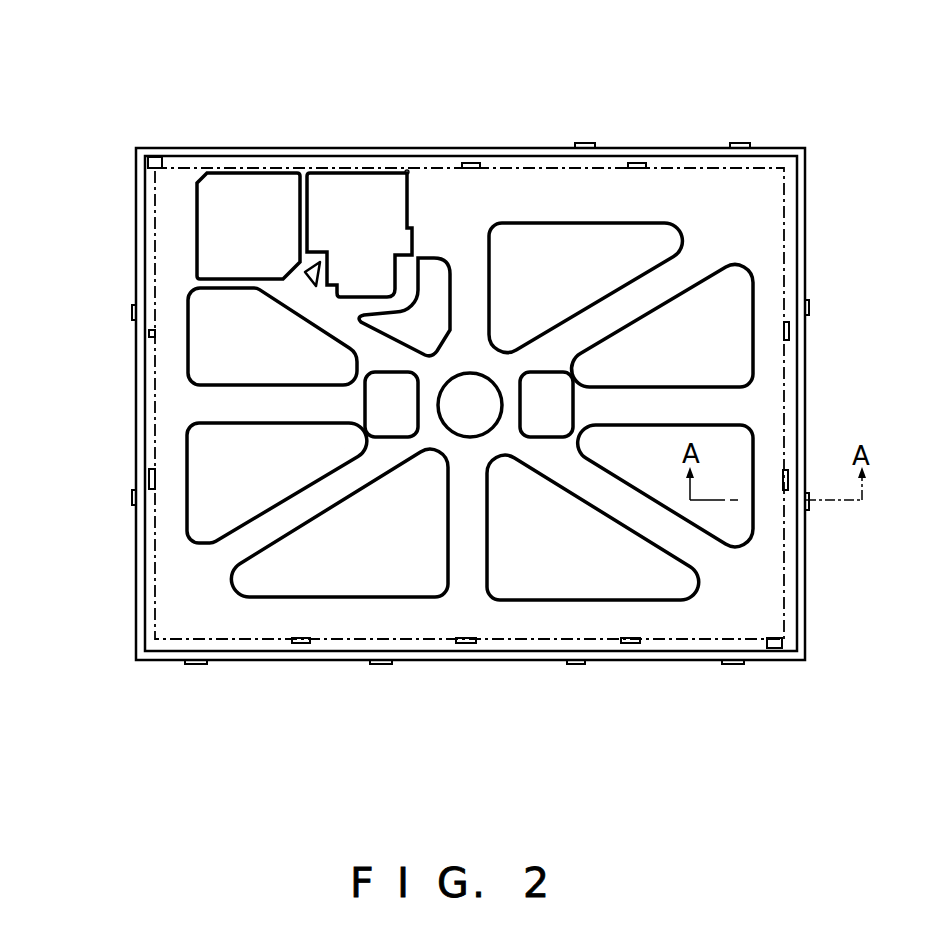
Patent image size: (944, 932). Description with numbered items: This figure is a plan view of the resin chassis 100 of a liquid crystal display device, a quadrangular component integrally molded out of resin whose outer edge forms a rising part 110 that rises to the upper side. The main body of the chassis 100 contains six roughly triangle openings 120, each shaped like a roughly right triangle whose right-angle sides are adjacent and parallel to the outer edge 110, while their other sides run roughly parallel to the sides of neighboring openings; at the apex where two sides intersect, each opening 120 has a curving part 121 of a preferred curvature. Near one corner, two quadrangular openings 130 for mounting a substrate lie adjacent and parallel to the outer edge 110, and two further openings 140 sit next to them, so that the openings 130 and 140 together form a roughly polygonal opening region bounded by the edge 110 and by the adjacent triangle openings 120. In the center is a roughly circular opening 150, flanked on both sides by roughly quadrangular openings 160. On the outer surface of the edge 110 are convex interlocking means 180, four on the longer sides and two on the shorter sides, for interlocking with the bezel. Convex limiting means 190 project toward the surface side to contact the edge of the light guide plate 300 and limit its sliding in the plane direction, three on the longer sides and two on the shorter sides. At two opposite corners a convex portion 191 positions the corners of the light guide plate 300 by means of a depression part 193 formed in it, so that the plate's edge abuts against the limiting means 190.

The resin chassis 100 is at (774, 108).
The rising part 110 is at (808, 158).
The roughly triangle opening 120 is at (541, 243).
The curving part 121 is at (190, 427).
The quadrangular opening for mounting a substrate 130 is at (256, 187).
The opening 140 is at (437, 268).
The roughly circular opening 150 is at (468, 410).
The roughly quadrangular opening 160 is at (550, 390).
The interlocking means 180 is at (586, 146).
The limiting means 190 is at (470, 163).
The convex portion for positioning 191 is at (150, 162).
The depression part 193 is at (176, 152).
The light guide plate 300 is at (156, 283).